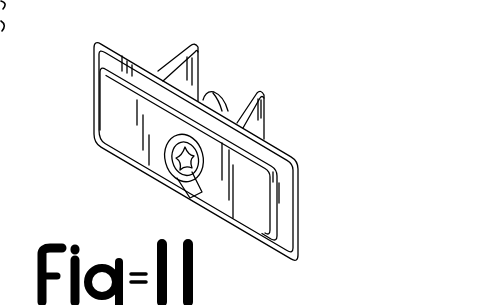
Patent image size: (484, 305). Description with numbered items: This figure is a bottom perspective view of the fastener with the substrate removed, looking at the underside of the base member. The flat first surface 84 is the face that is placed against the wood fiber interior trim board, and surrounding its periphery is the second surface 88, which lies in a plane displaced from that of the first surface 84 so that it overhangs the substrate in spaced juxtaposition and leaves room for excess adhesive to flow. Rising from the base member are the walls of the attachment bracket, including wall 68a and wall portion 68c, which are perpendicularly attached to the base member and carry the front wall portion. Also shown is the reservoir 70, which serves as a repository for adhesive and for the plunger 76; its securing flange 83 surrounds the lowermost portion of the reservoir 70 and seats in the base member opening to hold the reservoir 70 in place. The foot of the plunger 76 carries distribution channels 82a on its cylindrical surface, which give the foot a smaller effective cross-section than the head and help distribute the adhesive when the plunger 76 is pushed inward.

The wall 68a is at (203, 70).
The reservoir 70 is at (215, 93).
The wall portion 68c is at (268, 108).
The plunger 76 is at (166, 168).
The distribution channels 82a is at (178, 192).
The securing flange 83 is at (182, 194).
The first surface 84 is at (258, 220).
The second surface 88 is at (279, 241).